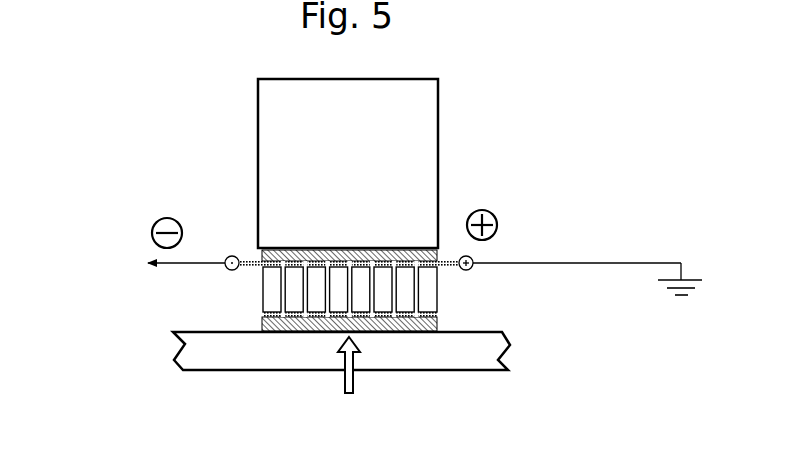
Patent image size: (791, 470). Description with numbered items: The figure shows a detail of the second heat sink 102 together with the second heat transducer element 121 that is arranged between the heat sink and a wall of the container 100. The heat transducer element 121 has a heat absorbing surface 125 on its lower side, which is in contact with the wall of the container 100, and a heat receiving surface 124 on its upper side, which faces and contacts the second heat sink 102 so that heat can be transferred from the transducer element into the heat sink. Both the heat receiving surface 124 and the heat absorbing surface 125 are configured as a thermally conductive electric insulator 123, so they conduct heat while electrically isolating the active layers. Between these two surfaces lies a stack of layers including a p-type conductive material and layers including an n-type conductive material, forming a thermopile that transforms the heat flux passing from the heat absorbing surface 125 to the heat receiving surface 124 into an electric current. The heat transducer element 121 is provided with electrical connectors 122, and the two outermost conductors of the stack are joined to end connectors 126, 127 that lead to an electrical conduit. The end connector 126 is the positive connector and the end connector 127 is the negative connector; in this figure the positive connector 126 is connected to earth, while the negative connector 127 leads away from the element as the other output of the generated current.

The container 100 is at (478, 349).
The second heat sink 102 is at (394, 112).
The second heat transducer element 121 is at (410, 284).
The electrical connectors 122 is at (245, 261).
The thermally conductive electric insulator 123 is at (382, 250).
The heat receiving surface 124 is at (285, 256).
The heat absorbing surface 125 is at (398, 333).
The positive connector 126 is at (473, 261).
The negative connector 127 is at (225, 265).